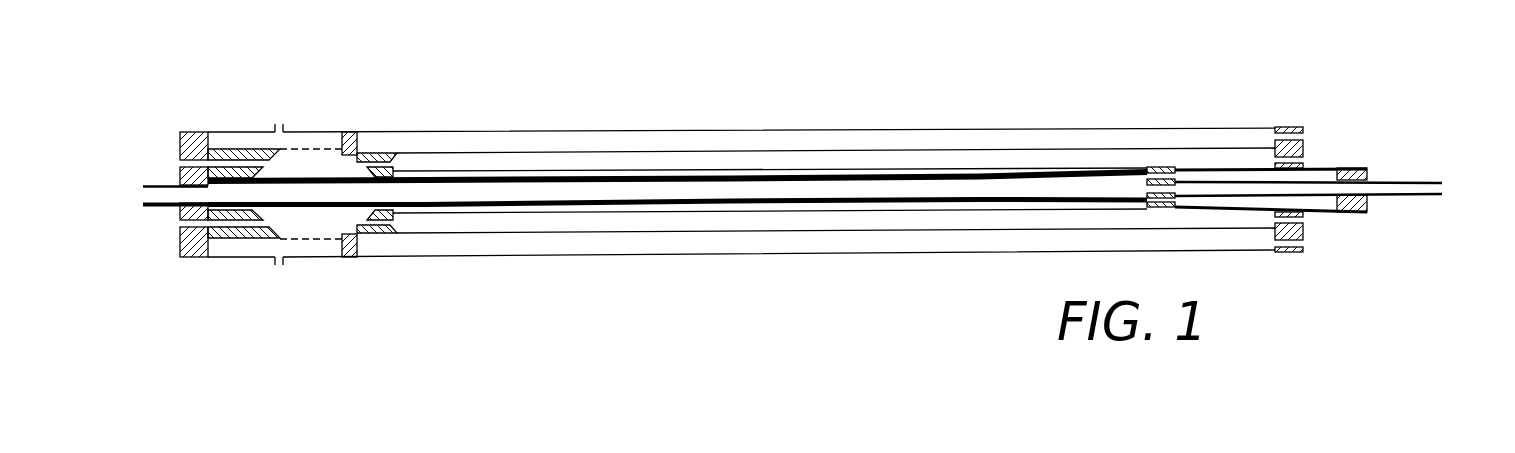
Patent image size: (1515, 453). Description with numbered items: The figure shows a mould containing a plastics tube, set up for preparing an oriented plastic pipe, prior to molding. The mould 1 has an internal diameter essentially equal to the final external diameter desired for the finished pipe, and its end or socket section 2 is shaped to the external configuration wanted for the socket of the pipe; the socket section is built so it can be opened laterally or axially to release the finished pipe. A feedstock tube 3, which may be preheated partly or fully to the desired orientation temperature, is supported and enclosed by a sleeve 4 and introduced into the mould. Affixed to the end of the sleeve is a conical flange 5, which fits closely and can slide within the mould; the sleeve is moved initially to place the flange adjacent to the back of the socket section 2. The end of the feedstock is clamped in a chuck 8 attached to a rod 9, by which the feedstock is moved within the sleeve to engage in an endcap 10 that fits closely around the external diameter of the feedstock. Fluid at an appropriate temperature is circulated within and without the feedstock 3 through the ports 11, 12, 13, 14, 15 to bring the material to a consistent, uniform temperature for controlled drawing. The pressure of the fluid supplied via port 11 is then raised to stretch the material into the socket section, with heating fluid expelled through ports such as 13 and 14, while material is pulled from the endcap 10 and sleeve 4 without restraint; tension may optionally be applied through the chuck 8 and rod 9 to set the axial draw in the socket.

The mould 1 is at (641, 150).
The socket section 2 is at (323, 130).
The feedstock tube 3 is at (320, 176).
The sleeve 4 is at (783, 168).
The conical flange 5 is at (343, 226).
The chuck 8 is at (1162, 165).
The rod 9 is at (1385, 180).
The endcap 10 is at (214, 136).
The port 11 is at (147, 193).
The port 12 is at (1445, 186).
The port 13 is at (178, 223).
The port 14 is at (388, 167).
The port 15 is at (1305, 158).